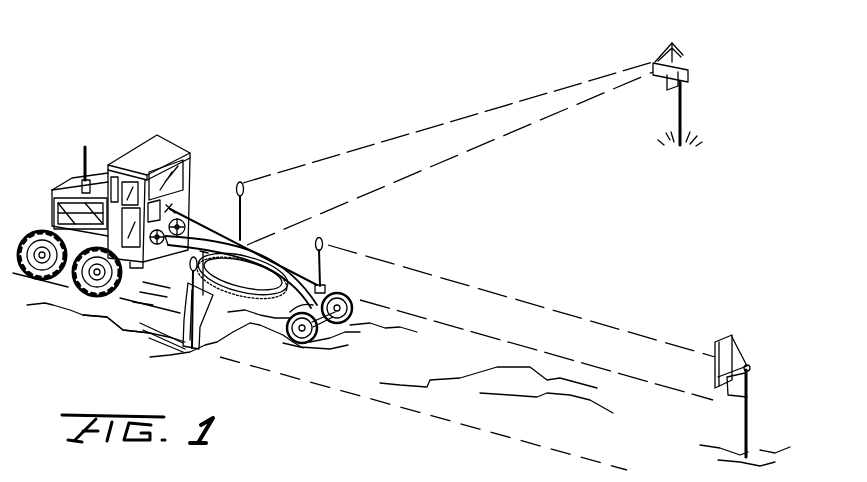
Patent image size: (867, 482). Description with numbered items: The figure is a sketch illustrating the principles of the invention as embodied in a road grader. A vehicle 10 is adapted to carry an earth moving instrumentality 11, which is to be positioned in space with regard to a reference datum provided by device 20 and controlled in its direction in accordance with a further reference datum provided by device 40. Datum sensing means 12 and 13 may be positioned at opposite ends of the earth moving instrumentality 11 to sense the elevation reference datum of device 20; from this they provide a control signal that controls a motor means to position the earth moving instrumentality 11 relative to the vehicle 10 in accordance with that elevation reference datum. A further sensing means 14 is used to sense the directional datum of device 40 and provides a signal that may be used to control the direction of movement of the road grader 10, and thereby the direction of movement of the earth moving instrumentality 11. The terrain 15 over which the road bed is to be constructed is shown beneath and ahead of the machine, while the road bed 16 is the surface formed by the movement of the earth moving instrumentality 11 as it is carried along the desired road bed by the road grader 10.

The vehicle 10 is at (213, 120).
The earth moving instrumentality 11 is at (190, 348).
The datum sensing means 12 is at (244, 190).
The datum sensing means 13 is at (188, 301).
The further sensing means 14 is at (324, 247).
The terrain 15 is at (337, 353).
The road bed 16 is at (137, 316).
The device 20 is at (709, 39).
The device 40 is at (784, 345).